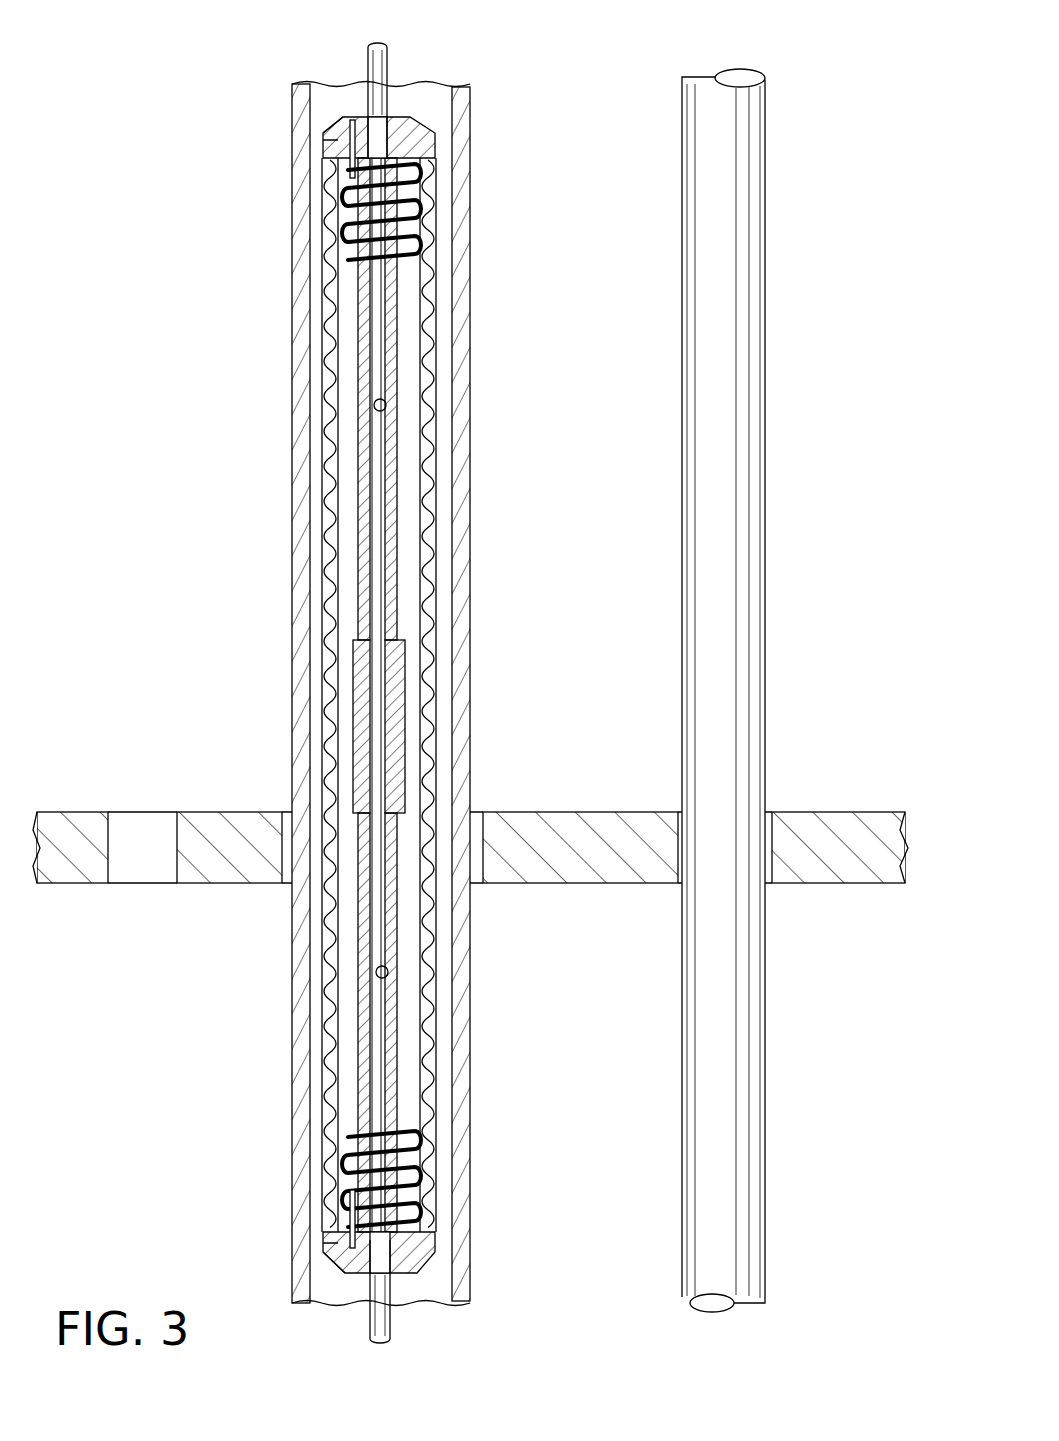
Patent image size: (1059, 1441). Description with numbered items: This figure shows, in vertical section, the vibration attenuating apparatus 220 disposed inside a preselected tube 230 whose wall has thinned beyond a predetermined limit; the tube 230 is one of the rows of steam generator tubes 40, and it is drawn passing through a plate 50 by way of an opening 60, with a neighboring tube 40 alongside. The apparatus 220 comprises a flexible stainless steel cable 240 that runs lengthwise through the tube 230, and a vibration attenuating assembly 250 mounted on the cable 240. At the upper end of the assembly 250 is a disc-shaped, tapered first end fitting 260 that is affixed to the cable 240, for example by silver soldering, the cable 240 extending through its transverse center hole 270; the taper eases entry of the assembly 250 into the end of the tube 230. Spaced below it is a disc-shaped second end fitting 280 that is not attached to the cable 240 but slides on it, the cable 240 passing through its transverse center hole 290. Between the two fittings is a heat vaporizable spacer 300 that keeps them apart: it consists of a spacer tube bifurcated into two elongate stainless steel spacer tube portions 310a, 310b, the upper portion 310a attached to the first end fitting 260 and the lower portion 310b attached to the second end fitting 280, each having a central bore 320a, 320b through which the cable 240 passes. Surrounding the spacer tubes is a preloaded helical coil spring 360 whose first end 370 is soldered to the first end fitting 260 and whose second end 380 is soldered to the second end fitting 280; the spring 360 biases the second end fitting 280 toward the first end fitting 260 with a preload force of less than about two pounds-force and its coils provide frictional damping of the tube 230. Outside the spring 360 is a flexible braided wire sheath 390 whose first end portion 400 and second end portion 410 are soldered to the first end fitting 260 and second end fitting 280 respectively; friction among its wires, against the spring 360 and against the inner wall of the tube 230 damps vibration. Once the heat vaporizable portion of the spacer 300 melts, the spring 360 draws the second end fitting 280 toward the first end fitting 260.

The tubes 40 is at (750, 148).
The plate 50 is at (805, 884).
The opening in plate 60 is at (748, 830).
The apparatus 220 is at (330, 225).
The preselected tube 230 is at (297, 107).
The flexible cable 240 is at (389, 60).
The vibration attenuating assembly 250 is at (330, 272).
The first end fitting 260 is at (425, 131).
The transverse center hole 270 is at (388, 118).
The second end fitting 280 is at (432, 1287).
The transverse center hole 290 is at (395, 1256).
The heat vaporizable spacer 300 is at (410, 612).
The spacer tube portion 310a is at (398, 352).
The spacer tube portion 310b is at (398, 930).
The central bore 320a is at (392, 412).
The central bore 320b is at (390, 978).
The helical coil spring 360 is at (418, 262).
The first end 370 is at (325, 143).
The second end 380 is at (330, 1243).
The flexible braided sheath 390 is at (330, 380).
The first end portion 400 is at (348, 180).
The second end portion 410 is at (342, 1190).